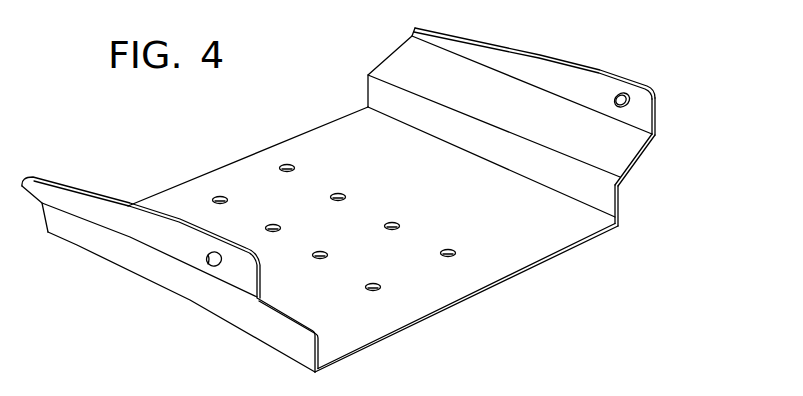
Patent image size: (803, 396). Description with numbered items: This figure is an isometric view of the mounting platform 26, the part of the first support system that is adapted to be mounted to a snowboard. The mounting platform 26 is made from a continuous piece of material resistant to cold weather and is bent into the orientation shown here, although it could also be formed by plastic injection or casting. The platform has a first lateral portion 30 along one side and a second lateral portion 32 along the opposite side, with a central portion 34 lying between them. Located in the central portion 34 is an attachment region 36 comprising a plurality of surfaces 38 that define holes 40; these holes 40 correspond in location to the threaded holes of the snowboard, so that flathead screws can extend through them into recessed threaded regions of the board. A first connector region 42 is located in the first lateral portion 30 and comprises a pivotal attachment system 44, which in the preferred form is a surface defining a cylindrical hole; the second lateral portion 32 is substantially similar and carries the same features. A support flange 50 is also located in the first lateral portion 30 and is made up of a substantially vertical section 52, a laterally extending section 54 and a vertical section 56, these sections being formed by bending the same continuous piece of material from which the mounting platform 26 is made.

The mounting platform 26 is at (227, 127).
The first lateral portion 30 is at (567, 72).
The second lateral portion 32 is at (142, 228).
The central portion 34 is at (412, 270).
The attachment region 36 is at (273, 165).
The surfaces 38 is at (220, 196).
The holes 40 is at (218, 205).
The first connector region 42 is at (238, 270).
The pivotal attachment system 44 is at (210, 265).
The support flange 50 is at (648, 158).
The substantially vertical section 52 is at (607, 197).
The laterally extending section 54 is at (619, 166).
The vertical section 56 is at (511, 58).